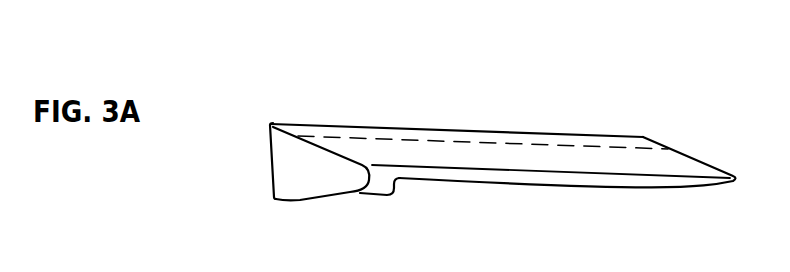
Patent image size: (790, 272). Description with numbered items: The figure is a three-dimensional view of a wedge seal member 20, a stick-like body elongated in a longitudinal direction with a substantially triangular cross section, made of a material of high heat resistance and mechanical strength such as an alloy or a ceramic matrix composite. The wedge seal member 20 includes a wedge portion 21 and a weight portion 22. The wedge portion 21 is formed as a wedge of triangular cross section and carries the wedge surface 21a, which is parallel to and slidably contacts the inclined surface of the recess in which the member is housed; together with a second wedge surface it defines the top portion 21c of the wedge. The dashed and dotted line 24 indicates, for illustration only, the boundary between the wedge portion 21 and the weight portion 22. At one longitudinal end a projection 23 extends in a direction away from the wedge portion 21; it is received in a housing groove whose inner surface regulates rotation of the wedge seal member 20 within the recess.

The wedge seal member 20 is at (663, 107).
The wedge portion 21 is at (268, 124).
The wedge surface 21a is at (348, 133).
The top portion 21c is at (488, 130).
The weight portion 22 is at (290, 177).
The projection 23 is at (372, 192).
The dashed and dotted line 24 is at (568, 147).